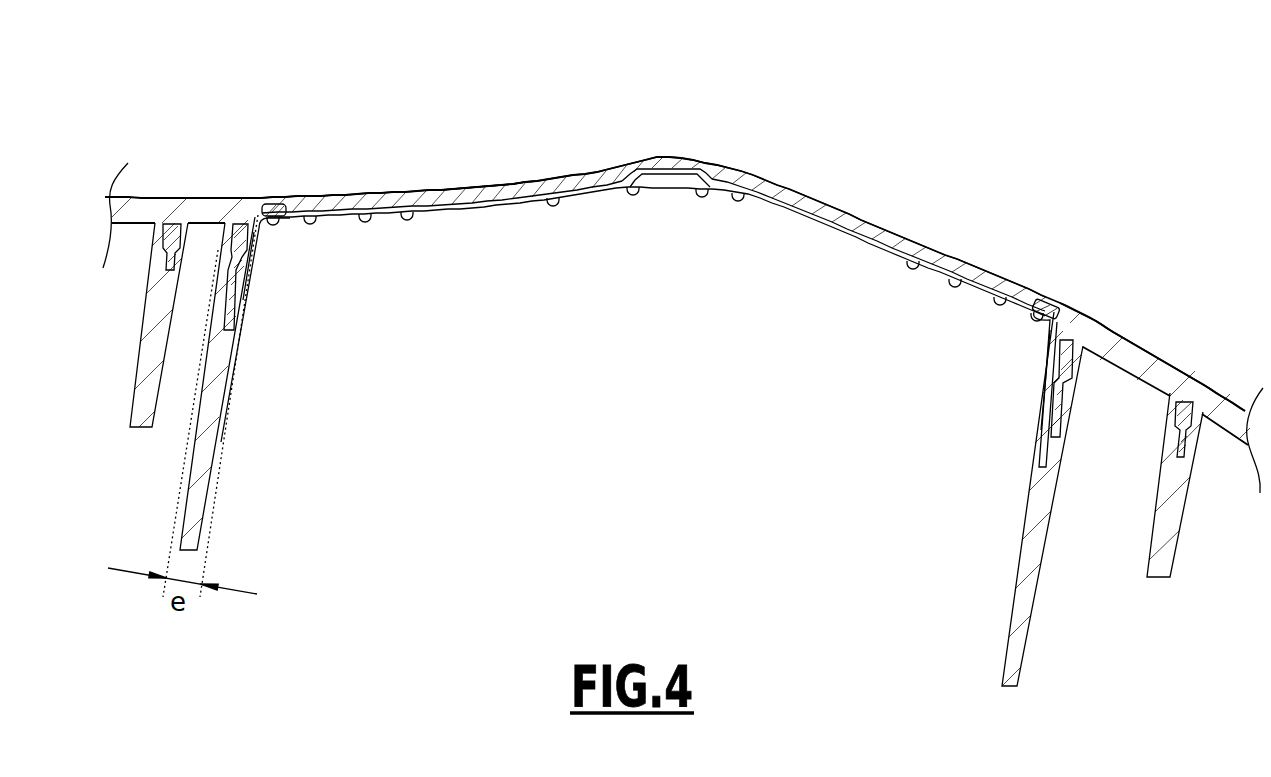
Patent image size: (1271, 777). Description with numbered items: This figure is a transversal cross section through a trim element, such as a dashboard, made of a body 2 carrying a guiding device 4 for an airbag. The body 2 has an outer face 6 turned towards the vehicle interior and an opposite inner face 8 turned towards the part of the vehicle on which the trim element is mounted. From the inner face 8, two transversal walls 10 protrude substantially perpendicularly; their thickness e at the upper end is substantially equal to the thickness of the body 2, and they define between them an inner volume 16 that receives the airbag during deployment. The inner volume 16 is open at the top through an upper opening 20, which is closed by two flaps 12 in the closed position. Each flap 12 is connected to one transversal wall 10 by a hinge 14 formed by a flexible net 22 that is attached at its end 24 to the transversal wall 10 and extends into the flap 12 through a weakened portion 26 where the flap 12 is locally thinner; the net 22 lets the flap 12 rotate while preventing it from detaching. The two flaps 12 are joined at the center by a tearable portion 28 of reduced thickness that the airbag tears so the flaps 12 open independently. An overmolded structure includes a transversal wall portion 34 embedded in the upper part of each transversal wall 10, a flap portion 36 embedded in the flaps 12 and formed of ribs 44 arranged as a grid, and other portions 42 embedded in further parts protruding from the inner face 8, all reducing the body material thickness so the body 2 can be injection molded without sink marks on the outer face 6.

The body 2 is at (1143, 350).
The guiding device 4 is at (1032, 608).
The outer face 6 is at (1105, 330).
The inner face 8 is at (1162, 382).
The transversal wall 10 is at (208, 462).
The flap 12 is at (393, 196).
The hinge 14 is at (262, 200).
The inner volume 16 is at (676, 400).
The upper opening 20 is at (665, 200).
The flexible net 22 is at (607, 210).
The end of the net 24 is at (240, 252).
The weakened portion 26 is at (300, 198).
The tearable portion 28 is at (665, 168).
The transversal wall portion 34 is at (232, 250).
The flap portion 36 is at (495, 186).
The other portions 42 is at (166, 228).
The ribs 44 is at (367, 232).